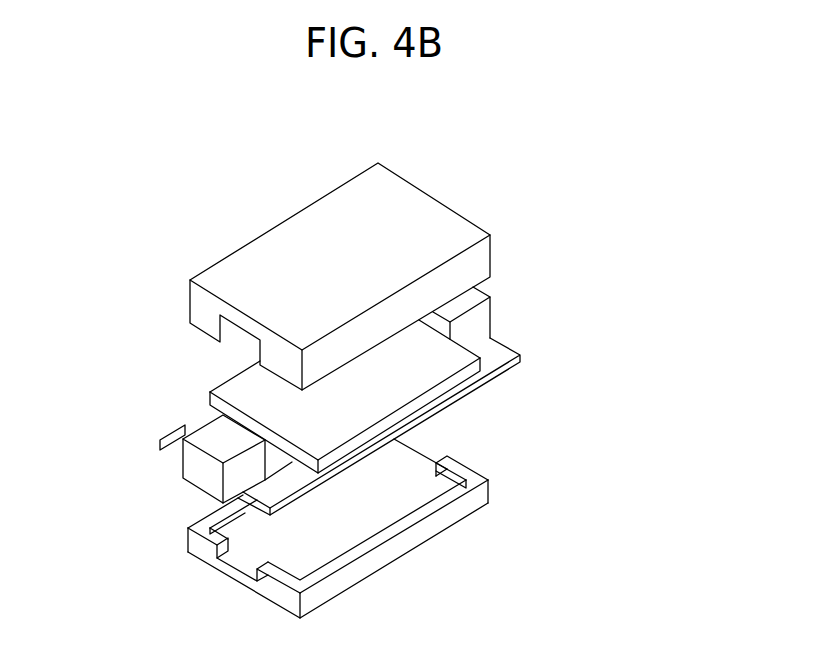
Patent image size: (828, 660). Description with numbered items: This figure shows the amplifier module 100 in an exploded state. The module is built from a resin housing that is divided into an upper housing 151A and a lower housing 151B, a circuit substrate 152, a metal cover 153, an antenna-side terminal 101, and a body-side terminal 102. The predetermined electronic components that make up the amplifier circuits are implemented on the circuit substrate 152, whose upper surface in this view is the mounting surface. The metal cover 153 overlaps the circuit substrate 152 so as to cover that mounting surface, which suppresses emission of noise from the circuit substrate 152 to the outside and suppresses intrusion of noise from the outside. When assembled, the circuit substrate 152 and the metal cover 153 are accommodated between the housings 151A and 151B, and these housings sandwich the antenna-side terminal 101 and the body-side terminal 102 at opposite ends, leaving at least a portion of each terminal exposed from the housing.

The amplifier module 100 is at (510, 128).
The housing 151A is at (458, 226).
The body-side terminal 102 is at (487, 323).
The metal cover 153 is at (390, 385).
The circuit substrate 152 is at (187, 425).
The antenna-side terminal 101 is at (203, 483).
The housing 151B is at (437, 527).